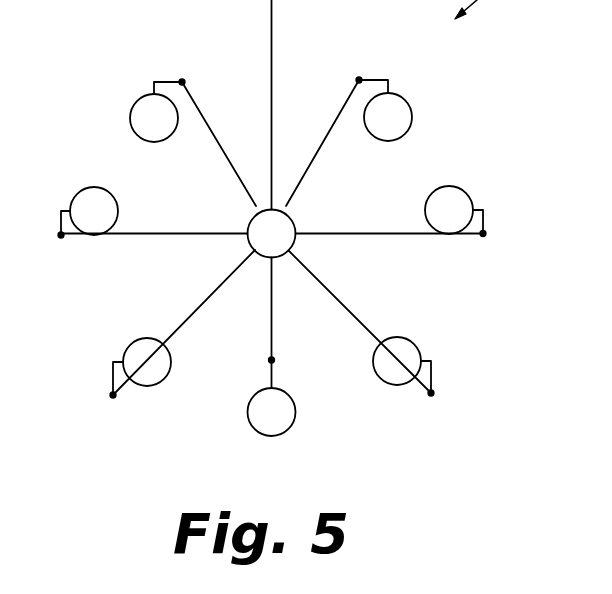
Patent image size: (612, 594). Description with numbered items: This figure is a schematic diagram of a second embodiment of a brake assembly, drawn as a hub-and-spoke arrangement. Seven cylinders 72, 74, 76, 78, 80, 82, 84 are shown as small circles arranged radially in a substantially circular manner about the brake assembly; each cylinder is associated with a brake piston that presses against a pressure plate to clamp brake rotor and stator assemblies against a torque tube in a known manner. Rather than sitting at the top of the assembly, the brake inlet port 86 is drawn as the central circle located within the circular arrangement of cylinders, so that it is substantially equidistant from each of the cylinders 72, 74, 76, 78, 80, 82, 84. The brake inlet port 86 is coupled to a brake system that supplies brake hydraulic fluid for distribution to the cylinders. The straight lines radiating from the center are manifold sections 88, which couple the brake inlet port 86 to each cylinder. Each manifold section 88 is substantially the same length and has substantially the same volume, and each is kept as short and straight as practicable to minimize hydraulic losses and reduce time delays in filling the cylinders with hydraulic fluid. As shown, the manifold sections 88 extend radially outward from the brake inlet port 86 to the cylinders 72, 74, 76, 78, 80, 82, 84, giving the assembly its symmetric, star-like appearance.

The cylinder 72 is at (137, 103).
The cylinder 74 is at (78, 194).
The cylinder 76 is at (130, 345).
The cylinder 78 is at (255, 430).
The cylinder 80 is at (414, 344).
The cylinder 82 is at (466, 193).
The cylinder 84 is at (405, 100).
The brake inlet port 86 is at (297, 222).
The manifold section 88 is at (221, 148).